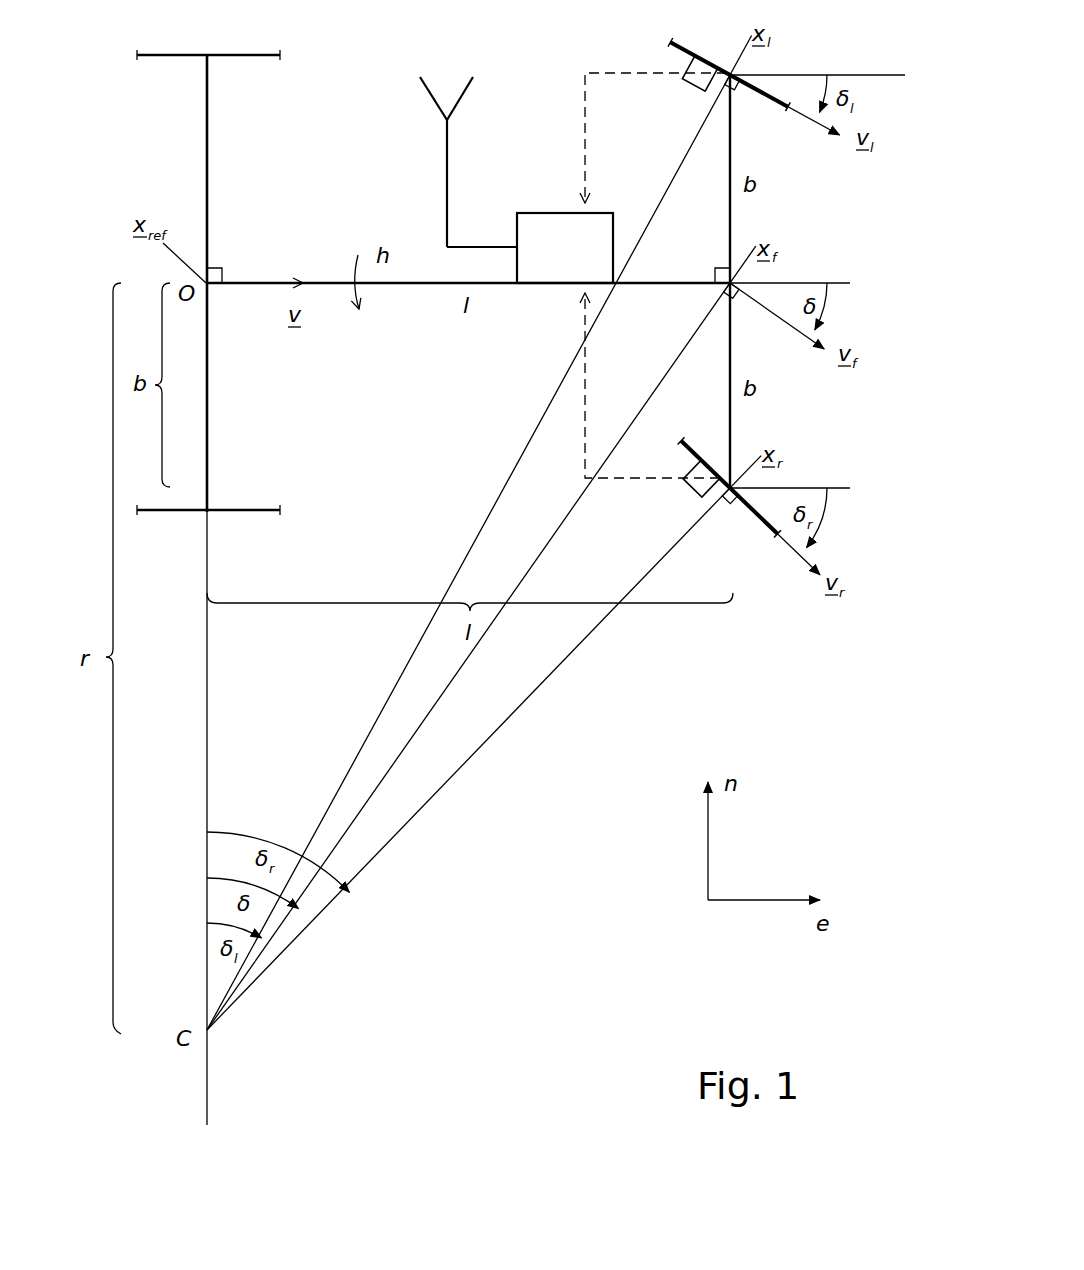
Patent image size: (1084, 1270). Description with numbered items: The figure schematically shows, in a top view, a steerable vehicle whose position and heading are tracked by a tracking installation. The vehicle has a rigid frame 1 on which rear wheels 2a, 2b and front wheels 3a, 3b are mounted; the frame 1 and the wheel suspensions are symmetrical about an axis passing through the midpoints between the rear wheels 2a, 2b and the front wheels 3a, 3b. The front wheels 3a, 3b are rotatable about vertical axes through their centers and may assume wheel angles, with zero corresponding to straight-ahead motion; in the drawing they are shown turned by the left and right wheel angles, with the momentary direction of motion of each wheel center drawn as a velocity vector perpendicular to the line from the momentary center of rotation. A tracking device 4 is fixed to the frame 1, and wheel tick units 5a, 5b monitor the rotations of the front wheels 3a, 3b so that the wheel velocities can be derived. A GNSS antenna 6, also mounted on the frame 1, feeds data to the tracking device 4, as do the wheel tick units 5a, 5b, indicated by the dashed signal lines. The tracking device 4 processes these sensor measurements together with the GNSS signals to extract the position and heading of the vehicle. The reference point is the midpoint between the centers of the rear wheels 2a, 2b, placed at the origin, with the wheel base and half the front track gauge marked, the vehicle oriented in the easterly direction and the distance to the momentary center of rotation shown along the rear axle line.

The rigid frame 1 is at (425, 283).
The rear wheel 2a is at (235, 52).
The rear wheel 2b is at (245, 513).
The front wheel 3a is at (722, 58).
The front wheel 3b is at (750, 508).
The tracking device 4 is at (572, 258).
The wheel tick unit 5a is at (699, 83).
The wheel tick unit 5b is at (701, 492).
The GNSS antenna 6 is at (458, 80).